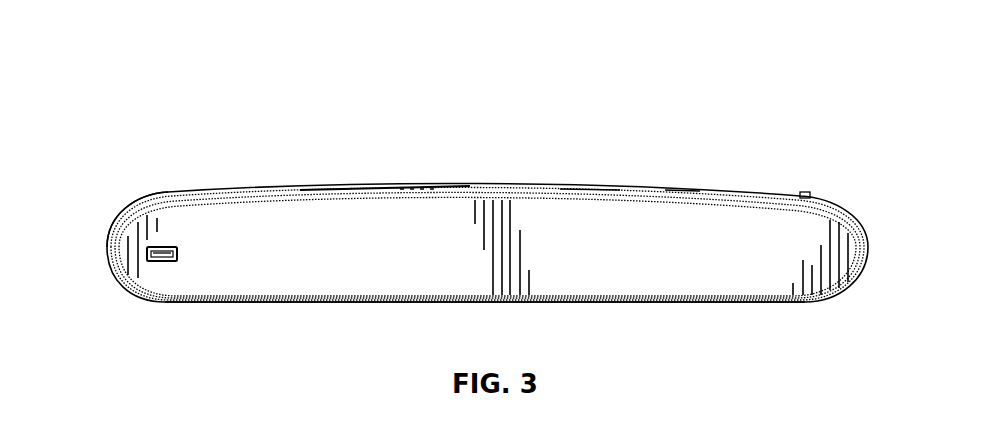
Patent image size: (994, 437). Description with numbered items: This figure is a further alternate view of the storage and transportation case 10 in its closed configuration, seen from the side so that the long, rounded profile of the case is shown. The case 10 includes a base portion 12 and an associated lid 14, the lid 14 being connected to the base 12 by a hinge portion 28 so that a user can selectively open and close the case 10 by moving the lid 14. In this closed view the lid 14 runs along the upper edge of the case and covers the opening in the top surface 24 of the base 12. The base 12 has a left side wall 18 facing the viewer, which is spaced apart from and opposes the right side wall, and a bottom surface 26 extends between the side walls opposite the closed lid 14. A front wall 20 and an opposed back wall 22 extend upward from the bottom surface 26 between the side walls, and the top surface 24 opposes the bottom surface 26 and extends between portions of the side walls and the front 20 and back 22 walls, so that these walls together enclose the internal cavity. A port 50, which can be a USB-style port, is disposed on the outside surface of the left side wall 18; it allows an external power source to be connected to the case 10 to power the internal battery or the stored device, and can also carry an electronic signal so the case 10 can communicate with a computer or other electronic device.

The storage and transportation case 10 is at (256, 60).
The base portion 12 is at (619, 323).
The lid 14 is at (386, 183).
The left side wall 18 is at (399, 247).
The front wall 20 is at (857, 268).
The back wall 22 is at (118, 273).
The top surface 24 is at (745, 198).
The bottom surface 26 is at (370, 300).
The hinge portion 28 is at (113, 232).
The port 50 is at (160, 262).